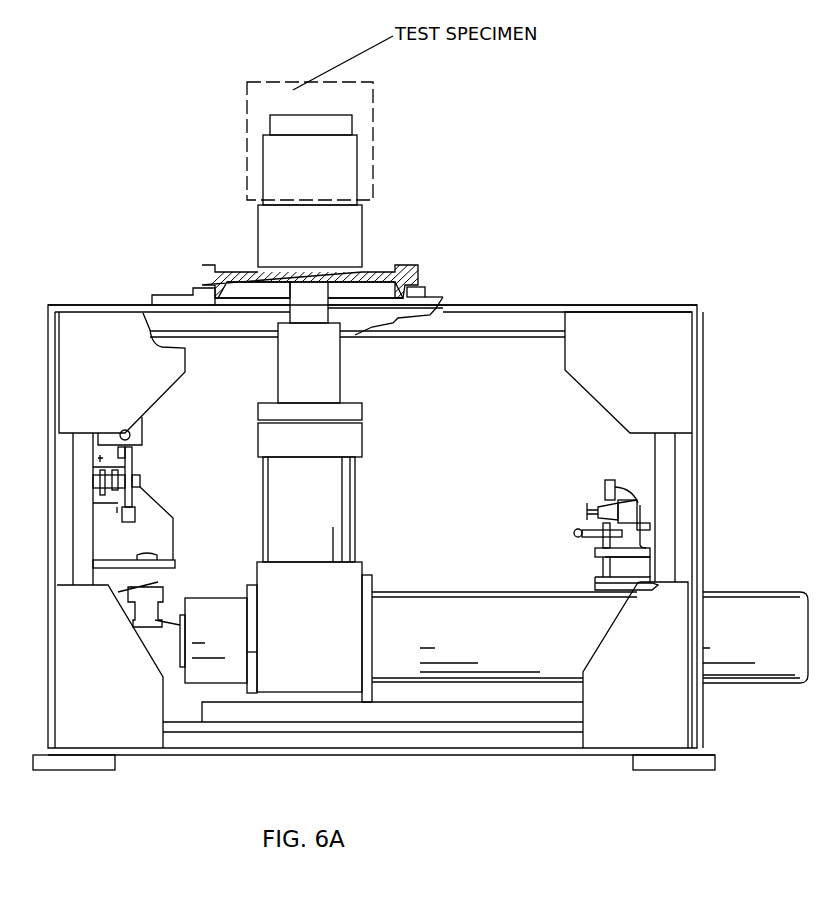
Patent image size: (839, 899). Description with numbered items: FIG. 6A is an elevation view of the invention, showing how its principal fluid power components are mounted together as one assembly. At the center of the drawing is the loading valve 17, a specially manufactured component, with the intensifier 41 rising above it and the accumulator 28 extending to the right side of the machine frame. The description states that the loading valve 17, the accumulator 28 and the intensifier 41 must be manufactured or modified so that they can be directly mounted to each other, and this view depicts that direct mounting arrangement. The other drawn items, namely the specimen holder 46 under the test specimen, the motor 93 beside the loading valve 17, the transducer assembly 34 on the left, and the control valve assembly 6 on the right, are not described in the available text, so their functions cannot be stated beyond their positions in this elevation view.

The specimen holder 46 is at (340, 166).
The intensifier 41 is at (340, 499).
The loading valve 17 is at (337, 587).
The motor 93 is at (216, 612).
The transducer assembly 34 is at (142, 522).
The control valve assembly 6 is at (618, 571).
The accumulator 28 is at (753, 610).